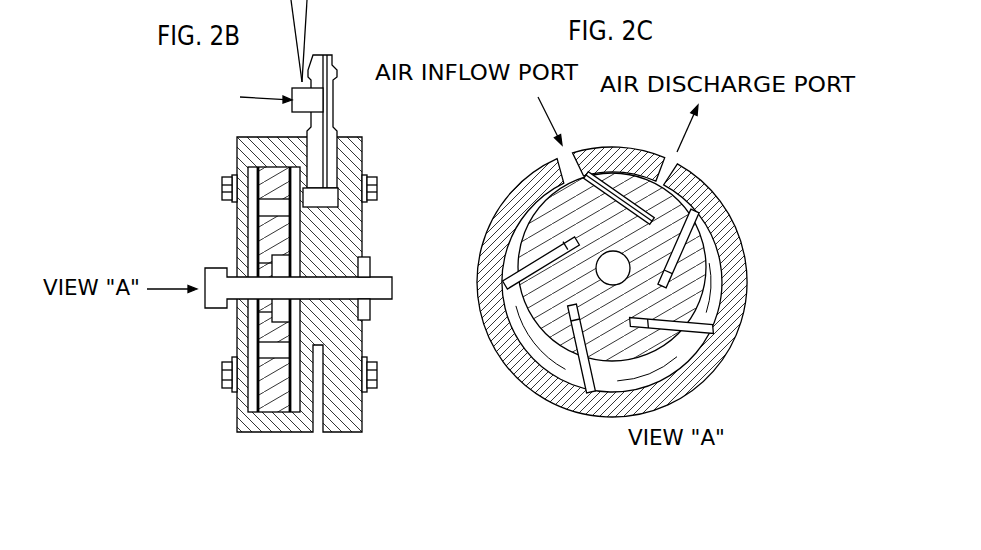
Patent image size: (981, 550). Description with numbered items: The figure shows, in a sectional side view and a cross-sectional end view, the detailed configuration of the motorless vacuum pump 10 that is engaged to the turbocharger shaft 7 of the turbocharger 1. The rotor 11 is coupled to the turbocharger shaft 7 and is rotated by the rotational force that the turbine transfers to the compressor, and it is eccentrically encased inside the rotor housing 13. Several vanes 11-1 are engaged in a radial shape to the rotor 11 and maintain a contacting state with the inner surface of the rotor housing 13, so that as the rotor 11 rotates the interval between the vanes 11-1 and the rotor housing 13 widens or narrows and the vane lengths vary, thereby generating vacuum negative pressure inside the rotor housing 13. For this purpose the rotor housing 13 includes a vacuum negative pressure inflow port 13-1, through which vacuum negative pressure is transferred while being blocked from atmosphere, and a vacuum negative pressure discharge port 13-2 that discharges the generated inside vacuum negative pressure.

In FIG. 2C, the turbocharger 1 is at (692, 262).
In FIG. 2B, the turbocharger shaft 7 is at (350, 288).
In FIG. 2C, the turbocharger shaft 7 is at (613, 277).
In FIG. 2B, the motorless vacuum pump 10 is at (206, 261).
In FIG. 2B, the rotor 11 is at (278, 420).
In FIG. 2C, the vanes 11-1 is at (690, 225).
In FIG. 2B, the rotor housing 13 is at (343, 420).
In FIG. 2C, the rotor housing 13 is at (717, 357).
In FIG. 2C, the vacuum negative pressure inflow port 13-1 is at (563, 162).
In FIG. 2C, the vacuum negative pressure discharge port 13-2 is at (675, 170).